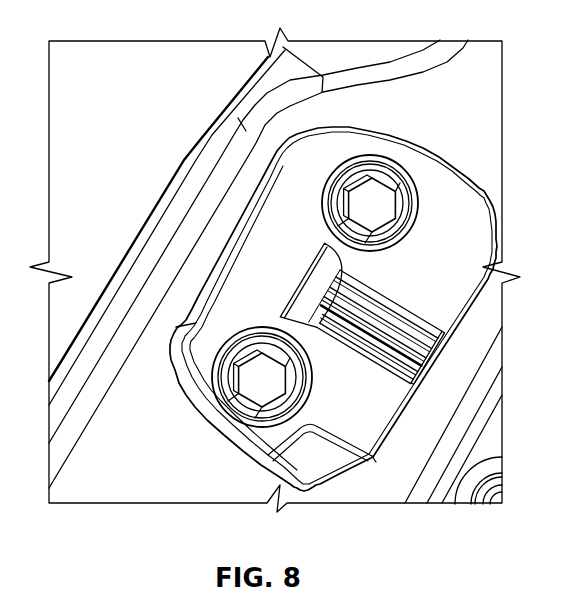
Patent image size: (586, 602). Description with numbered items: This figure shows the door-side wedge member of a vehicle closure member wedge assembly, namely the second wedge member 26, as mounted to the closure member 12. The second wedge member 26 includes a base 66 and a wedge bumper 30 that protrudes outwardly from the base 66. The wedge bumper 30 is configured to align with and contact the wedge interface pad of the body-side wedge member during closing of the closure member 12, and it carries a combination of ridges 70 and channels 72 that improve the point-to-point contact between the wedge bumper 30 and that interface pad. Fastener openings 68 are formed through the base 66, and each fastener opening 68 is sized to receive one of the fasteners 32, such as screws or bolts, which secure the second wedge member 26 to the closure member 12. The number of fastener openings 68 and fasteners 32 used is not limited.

The closure member 12 is at (488, 107).
The second wedge member 26 is at (489, 191).
The wedge bumper 30 is at (297, 317).
The fasteners 32 is at (382, 203).
The base 66 is at (486, 244).
The fastener openings 68 is at (403, 168).
The ridges 70 is at (340, 270).
The channels 72 is at (326, 300).